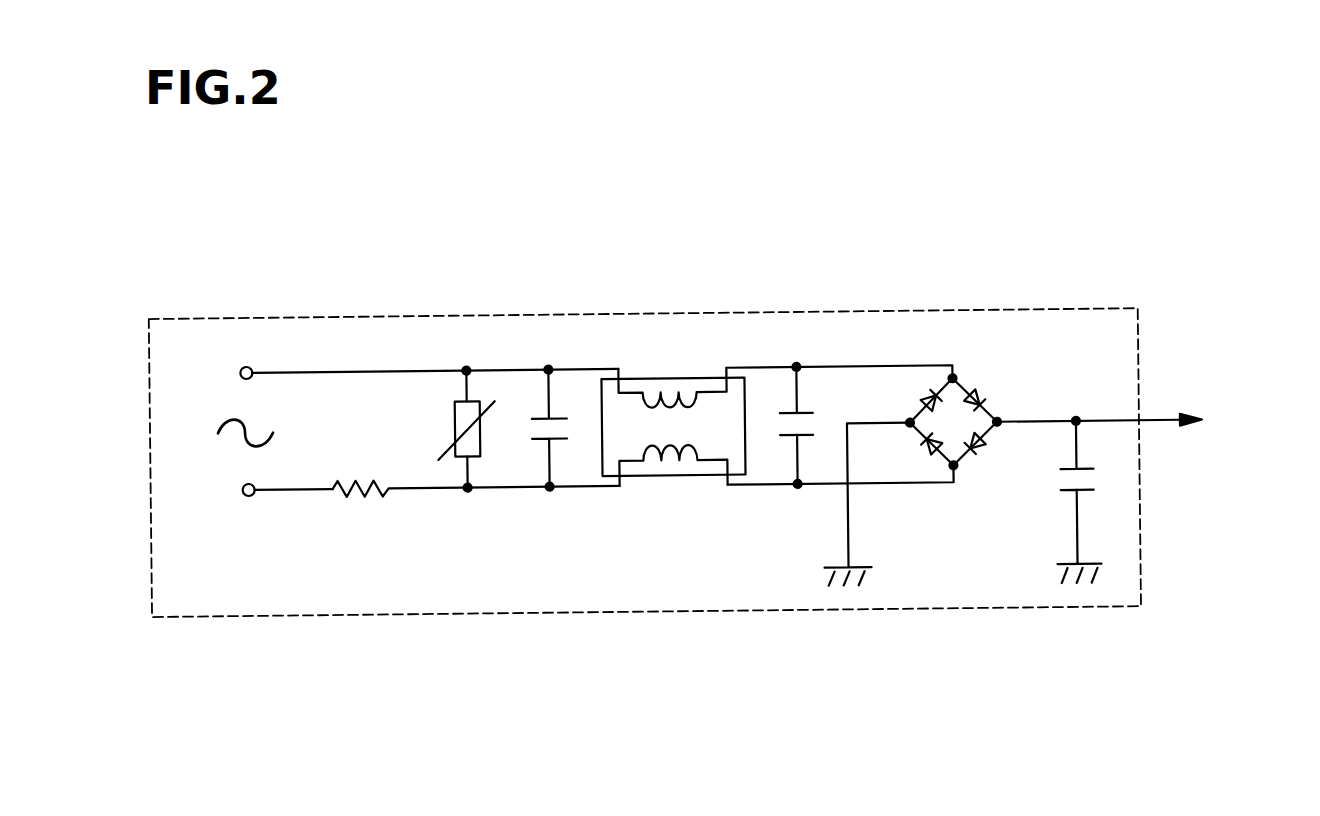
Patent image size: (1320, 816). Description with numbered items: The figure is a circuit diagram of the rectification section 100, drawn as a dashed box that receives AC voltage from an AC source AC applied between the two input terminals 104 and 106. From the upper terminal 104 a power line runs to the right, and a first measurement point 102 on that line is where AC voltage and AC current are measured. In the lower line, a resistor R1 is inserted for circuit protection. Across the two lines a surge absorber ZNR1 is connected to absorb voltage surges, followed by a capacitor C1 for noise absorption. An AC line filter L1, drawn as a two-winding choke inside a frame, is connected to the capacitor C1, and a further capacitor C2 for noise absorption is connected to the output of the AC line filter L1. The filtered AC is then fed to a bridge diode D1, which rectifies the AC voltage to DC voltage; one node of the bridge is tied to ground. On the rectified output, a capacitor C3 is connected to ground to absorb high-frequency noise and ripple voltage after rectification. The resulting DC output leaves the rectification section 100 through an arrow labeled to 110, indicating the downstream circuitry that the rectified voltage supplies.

The rectification section 100 is at (1018, 314).
The first measurement point 102 is at (382, 373).
The terminal 104 is at (247, 366).
The terminal 106 is at (248, 497).
The AC voltage AC is at (221, 419).
The resistor R1 is at (352, 498).
The surge absorber ZNR1 is at (453, 430).
The capacitor C1 is at (543, 445).
The AC line filter L1 is at (677, 482).
The capacitor C2 is at (812, 412).
The bridge diode D1 is at (925, 467).
The capacitor C3 is at (1067, 501).
The downstream circuit (output destination) 110 is at (1242, 415).